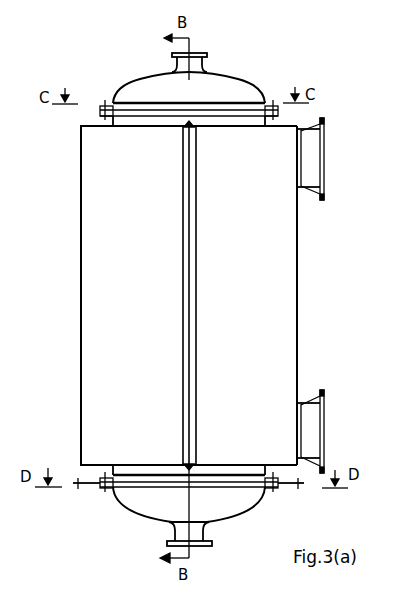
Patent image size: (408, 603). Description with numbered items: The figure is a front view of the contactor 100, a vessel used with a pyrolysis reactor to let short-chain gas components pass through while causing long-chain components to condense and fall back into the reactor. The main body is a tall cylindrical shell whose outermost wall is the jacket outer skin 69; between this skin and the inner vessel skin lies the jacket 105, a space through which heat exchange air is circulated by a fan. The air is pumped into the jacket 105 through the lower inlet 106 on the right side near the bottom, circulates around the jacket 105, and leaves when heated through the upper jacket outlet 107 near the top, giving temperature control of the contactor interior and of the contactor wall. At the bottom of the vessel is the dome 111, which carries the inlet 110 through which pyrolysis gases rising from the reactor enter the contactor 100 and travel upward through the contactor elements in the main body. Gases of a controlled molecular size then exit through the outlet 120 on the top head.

The contactor 100 is at (94, 62).
The jacket outer skin 69 is at (80, 348).
The jacket 105 is at (298, 278).
The outlet 120 is at (237, 79).
The upper jacket outlet 107 is at (324, 142).
The lower inlet 106 is at (324, 406).
The dome 111 is at (132, 499).
The inlet 110 is at (164, 539).